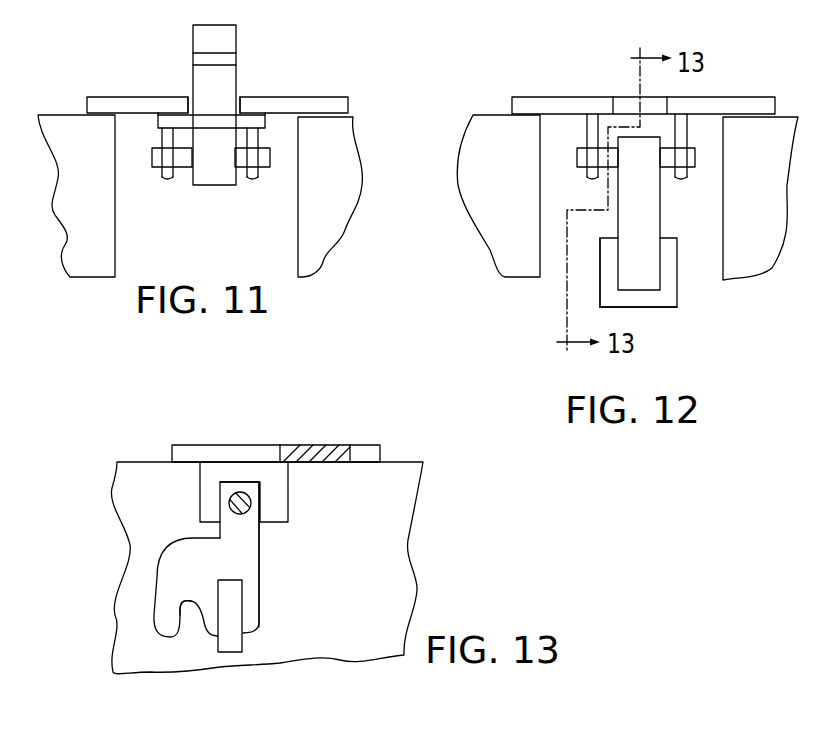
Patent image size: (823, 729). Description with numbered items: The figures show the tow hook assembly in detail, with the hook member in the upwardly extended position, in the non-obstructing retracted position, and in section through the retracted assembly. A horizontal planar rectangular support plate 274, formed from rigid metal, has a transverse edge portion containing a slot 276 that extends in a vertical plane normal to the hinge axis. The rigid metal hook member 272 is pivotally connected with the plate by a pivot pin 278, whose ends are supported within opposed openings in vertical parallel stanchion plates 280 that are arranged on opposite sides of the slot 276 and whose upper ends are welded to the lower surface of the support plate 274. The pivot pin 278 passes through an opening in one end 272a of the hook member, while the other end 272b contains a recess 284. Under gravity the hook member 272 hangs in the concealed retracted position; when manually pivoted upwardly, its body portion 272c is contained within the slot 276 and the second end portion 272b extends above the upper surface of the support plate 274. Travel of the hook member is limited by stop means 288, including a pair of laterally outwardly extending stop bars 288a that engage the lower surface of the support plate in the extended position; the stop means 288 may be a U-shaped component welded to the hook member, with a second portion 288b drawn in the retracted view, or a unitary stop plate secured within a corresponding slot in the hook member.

In FIG. 11, the hook member 272 is at (227, 38).
In FIG. 12, the hook member 272 is at (645, 273).
In FIG. 13, the hook member 272 is at (266, 644).
In FIG. 13, the one end of the hook member 272a is at (225, 488).
In FIG. 13, the other end of the hook member 272b is at (167, 607).
In FIG. 13, the body portion of the hook member 272c is at (232, 557).
In FIG. 11, the support plate 274 is at (90, 100).
In FIG. 12, the support plate 274 is at (563, 97).
In FIG. 13, the support plate 274 is at (315, 443).
In FIG. 11, the slot 276 is at (240, 106).
In FIG. 12, the slot 276 is at (655, 103).
In FIG. 13, the slot 276 is at (237, 453).
In FIG. 11, the pivot pin 278 is at (150, 150).
In FIG. 12, the pivot pin 278 is at (690, 162).
In FIG. 13, the pivot pin 278 is at (252, 502).
In FIG. 11, the stanchion plates 280 is at (163, 178).
In FIG. 12, the stanchion plates 280 is at (680, 180).
In FIG. 13, the stanchion plates 280 is at (203, 500).
In FIG. 13, the recess 284 is at (193, 625).
In FIG. 11, the stop means 288 is at (266, 129).
In FIG. 12, the stop means 288 is at (590, 298).
In FIG. 13, the stop means 288 is at (231, 655).
In FIG. 11, the stop bars 288a is at (173, 118).
In FIG. 12, the stop bars 288a is at (610, 248).
In FIG. 12, the second flange of bracket 288b is at (675, 260).